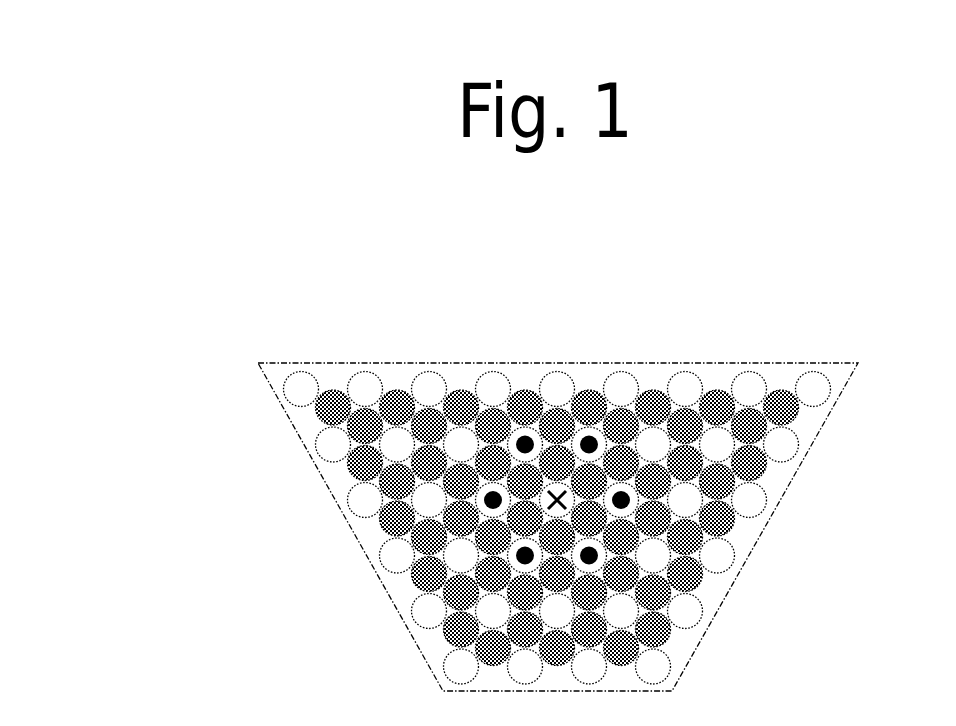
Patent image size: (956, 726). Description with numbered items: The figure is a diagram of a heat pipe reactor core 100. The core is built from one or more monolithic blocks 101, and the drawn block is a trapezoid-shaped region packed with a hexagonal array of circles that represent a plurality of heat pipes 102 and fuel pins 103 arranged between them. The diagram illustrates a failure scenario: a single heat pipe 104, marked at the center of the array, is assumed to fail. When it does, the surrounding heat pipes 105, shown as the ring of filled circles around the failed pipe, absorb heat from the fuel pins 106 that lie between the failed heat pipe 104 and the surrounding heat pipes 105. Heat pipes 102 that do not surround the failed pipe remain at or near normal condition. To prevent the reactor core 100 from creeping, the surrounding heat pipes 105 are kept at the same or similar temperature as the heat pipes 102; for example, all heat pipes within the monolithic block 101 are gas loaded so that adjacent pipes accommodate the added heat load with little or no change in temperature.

The heat pipe reactor core 100 is at (153, 283).
The monolithic block 101 is at (518, 355).
The heat pipe 102 is at (742, 492).
The fuel pin 103 is at (705, 578).
The failed heat pipe 104 is at (476, 542).
The surrounding heat pipe 105 is at (447, 598).
The fuel pin between failed and surrounding heat pipes 106 is at (648, 393).